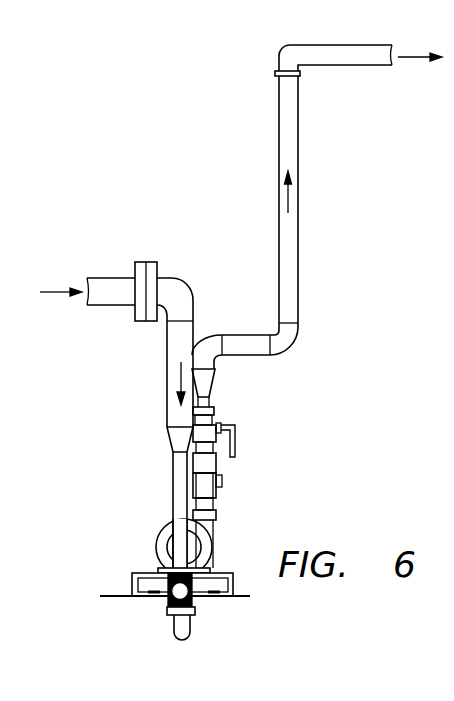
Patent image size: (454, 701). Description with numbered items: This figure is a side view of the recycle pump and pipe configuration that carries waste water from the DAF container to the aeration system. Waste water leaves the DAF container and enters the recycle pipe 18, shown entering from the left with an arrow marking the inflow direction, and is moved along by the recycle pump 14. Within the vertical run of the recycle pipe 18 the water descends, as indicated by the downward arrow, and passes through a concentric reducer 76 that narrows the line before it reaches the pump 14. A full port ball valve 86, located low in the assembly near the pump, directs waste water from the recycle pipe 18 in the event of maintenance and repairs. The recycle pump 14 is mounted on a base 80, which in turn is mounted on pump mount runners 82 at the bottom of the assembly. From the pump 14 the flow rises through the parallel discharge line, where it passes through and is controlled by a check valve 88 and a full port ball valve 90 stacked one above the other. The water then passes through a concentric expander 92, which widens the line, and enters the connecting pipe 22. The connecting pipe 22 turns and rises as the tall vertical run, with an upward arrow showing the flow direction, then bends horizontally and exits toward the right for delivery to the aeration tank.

The recycle pump 14 is at (158, 528).
The recycle pipe 18 is at (167, 365).
The connecting pipe 22 is at (299, 229).
The concentric reducer 76 is at (170, 445).
The base 80 is at (136, 574).
The pump mount runners 82 is at (219, 597).
The full port ball valve 86 is at (168, 599).
The check valve 88 is at (218, 488).
The full port ball valve 90 is at (214, 419).
The concentric expander 92 is at (210, 385).